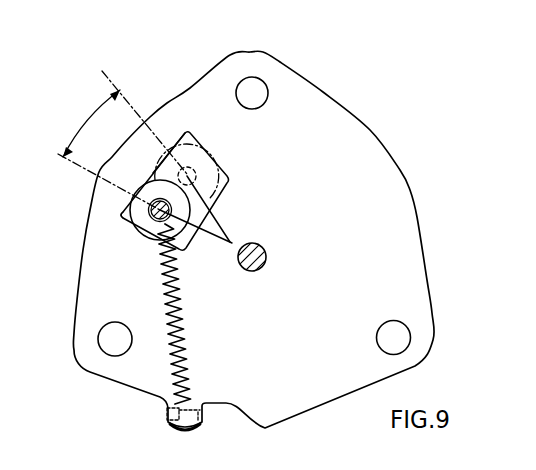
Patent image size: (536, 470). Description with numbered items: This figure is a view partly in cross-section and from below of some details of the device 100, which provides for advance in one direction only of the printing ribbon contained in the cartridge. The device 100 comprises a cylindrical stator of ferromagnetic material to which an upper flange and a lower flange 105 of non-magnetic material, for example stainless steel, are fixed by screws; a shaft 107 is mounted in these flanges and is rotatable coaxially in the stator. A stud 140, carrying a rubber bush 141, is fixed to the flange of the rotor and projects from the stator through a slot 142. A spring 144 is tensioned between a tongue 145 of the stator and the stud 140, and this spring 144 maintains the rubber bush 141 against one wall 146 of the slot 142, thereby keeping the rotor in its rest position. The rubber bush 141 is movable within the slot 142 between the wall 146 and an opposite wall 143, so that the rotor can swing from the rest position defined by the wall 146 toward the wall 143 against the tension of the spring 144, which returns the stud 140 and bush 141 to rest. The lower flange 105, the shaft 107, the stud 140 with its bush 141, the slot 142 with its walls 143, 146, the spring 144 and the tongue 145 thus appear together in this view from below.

The device 100 is at (330, 82).
The lower flange 105 is at (350, 130).
The shaft 107 is at (265, 256).
The stud 140 is at (159, 222).
The rubber bush 141 is at (186, 212).
The slot 142 is at (145, 171).
The wall 143 is at (230, 180).
The spring 144 is at (185, 306).
The tongue 145 is at (201, 417).
The wall 146 is at (122, 220).